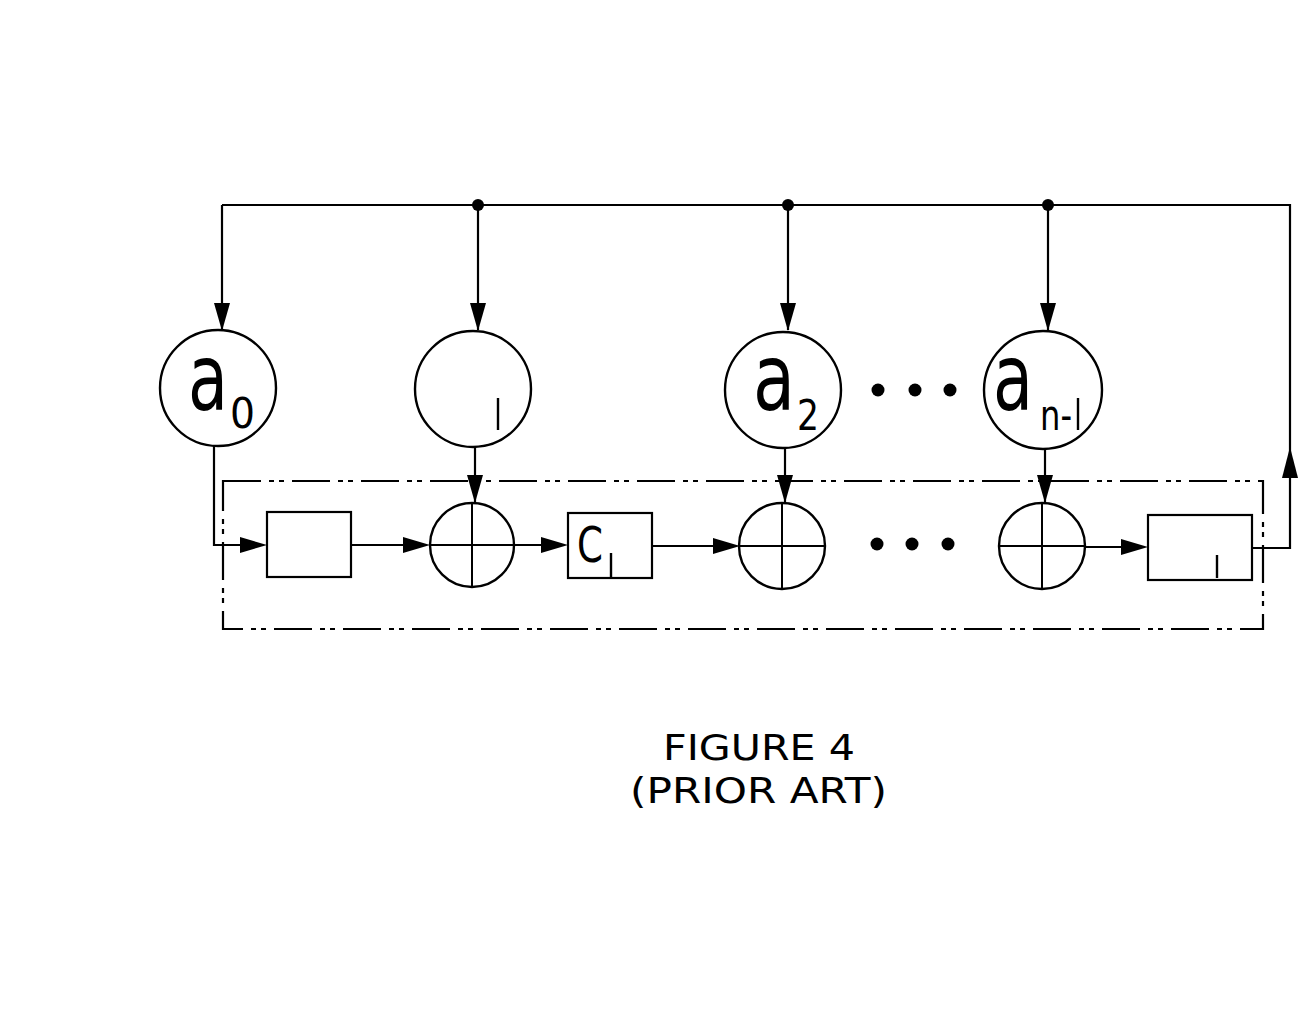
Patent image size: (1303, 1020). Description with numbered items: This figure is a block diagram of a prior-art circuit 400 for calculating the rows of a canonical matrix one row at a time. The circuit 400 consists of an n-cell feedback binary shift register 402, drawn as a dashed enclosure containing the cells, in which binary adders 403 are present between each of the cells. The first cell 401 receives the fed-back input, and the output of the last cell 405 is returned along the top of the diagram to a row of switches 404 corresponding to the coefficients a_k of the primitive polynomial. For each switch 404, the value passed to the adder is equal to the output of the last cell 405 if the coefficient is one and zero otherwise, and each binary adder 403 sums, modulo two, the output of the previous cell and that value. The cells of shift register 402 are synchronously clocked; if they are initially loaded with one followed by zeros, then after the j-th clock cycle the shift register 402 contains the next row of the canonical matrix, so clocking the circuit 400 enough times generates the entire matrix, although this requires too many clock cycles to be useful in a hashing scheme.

The circuit 400 is at (250, 125).
The shift register stage C0 401 is at (296, 518).
The feedback binary shift register 402 is at (237, 619).
The binary adder 403 is at (487, 575).
The switch 404 is at (518, 372).
The last cell 405 is at (1225, 573).